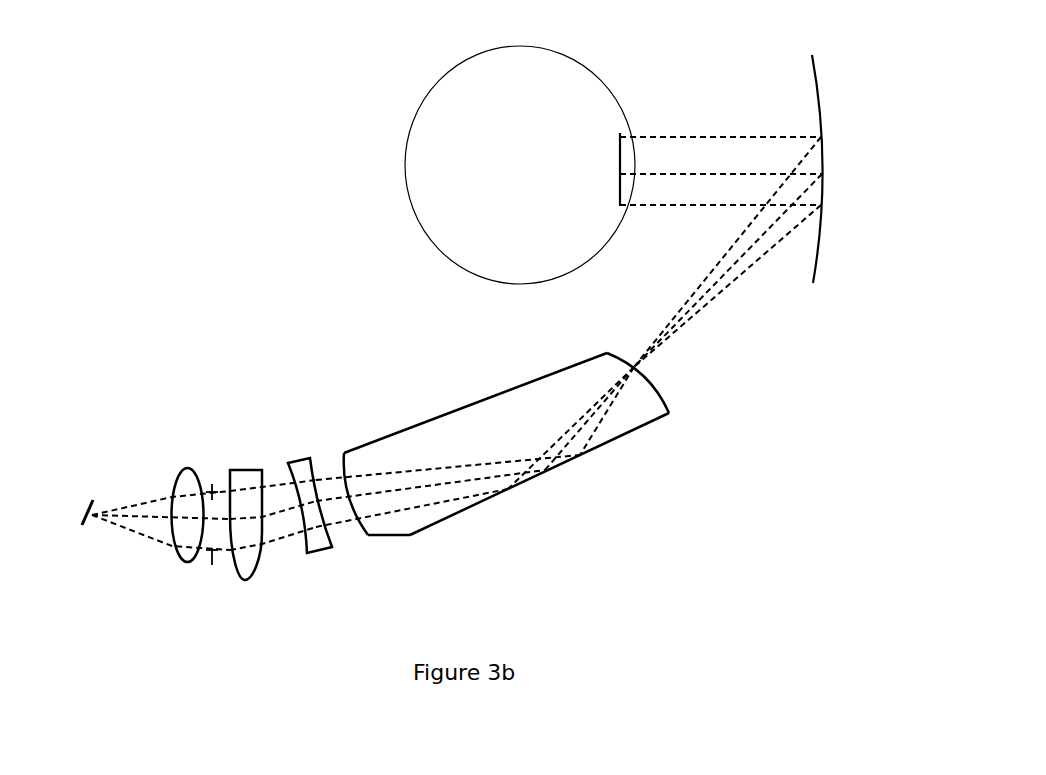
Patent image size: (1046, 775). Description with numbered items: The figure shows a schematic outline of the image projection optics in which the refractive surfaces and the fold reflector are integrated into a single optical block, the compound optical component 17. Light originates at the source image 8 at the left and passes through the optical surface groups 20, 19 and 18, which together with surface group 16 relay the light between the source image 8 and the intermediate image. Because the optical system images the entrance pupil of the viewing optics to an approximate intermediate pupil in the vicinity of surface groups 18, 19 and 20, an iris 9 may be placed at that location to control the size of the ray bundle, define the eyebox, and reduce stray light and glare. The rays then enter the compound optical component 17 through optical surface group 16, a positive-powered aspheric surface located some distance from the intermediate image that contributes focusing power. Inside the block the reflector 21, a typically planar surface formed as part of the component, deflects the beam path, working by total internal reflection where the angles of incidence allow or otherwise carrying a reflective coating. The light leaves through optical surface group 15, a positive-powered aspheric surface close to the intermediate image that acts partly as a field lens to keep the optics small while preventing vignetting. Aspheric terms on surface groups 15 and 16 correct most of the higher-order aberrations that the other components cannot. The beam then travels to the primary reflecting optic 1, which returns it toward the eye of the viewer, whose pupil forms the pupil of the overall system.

The visor / partially reflective combiner surface 1 is at (820, 240).
The source image 8 is at (88, 505).
The iris 9 is at (212, 487).
The optical surface group 15 is at (670, 400).
The optical surface group 16 is at (343, 464).
The compound optical component 17 is at (467, 420).
The optical surface group 18 is at (322, 543).
The optical surface group 19 is at (250, 565).
The optical surface group 20 is at (187, 558).
The reflector 21 is at (525, 483).